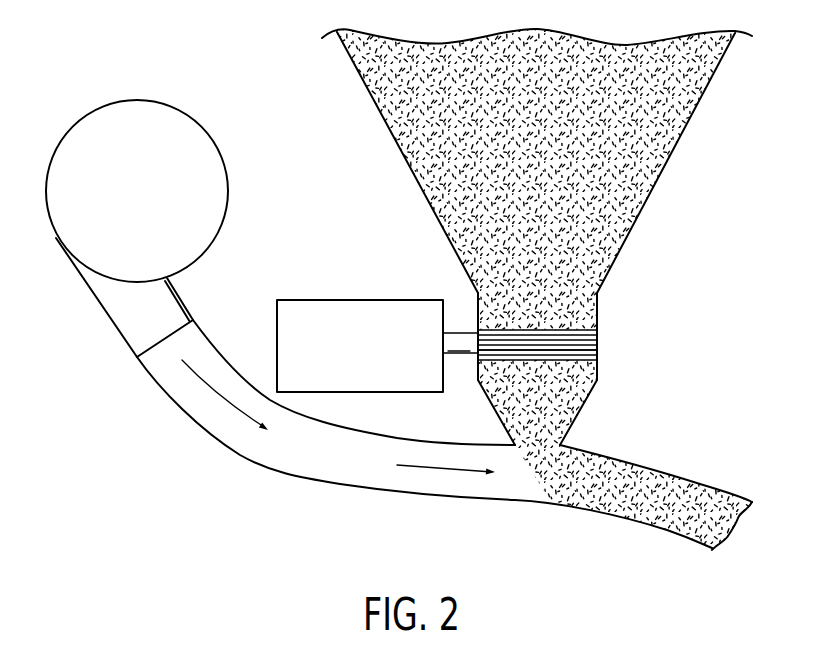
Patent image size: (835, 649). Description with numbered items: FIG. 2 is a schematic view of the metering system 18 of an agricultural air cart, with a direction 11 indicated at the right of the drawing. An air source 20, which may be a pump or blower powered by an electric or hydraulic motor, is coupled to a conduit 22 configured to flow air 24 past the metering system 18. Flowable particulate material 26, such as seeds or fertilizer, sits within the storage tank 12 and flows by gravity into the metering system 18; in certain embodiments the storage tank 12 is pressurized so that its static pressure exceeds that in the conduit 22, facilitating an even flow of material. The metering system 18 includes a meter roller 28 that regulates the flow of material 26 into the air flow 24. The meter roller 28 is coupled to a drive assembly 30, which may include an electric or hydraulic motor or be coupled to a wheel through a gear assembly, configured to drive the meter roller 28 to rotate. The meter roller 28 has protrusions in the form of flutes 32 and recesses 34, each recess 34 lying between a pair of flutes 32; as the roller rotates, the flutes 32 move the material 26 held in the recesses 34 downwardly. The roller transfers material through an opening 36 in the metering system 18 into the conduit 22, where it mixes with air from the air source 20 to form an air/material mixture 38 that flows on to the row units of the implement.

The downstream direction 11 is at (730, 330).
The storage tank 12 is at (357, 68).
The metering system 18 is at (611, 314).
The air source 20 is at (137, 100).
The conduit 22 is at (297, 477).
The air 24 is at (220, 398).
The flowable particulate material 26 is at (690, 85).
The meter roller 28 is at (570, 370).
The drive assembly 30 is at (354, 300).
The flutes 32 is at (568, 345).
The recesses 34 is at (588, 353).
The opening 36 is at (543, 448).
The air/material mixture 38 is at (652, 510).